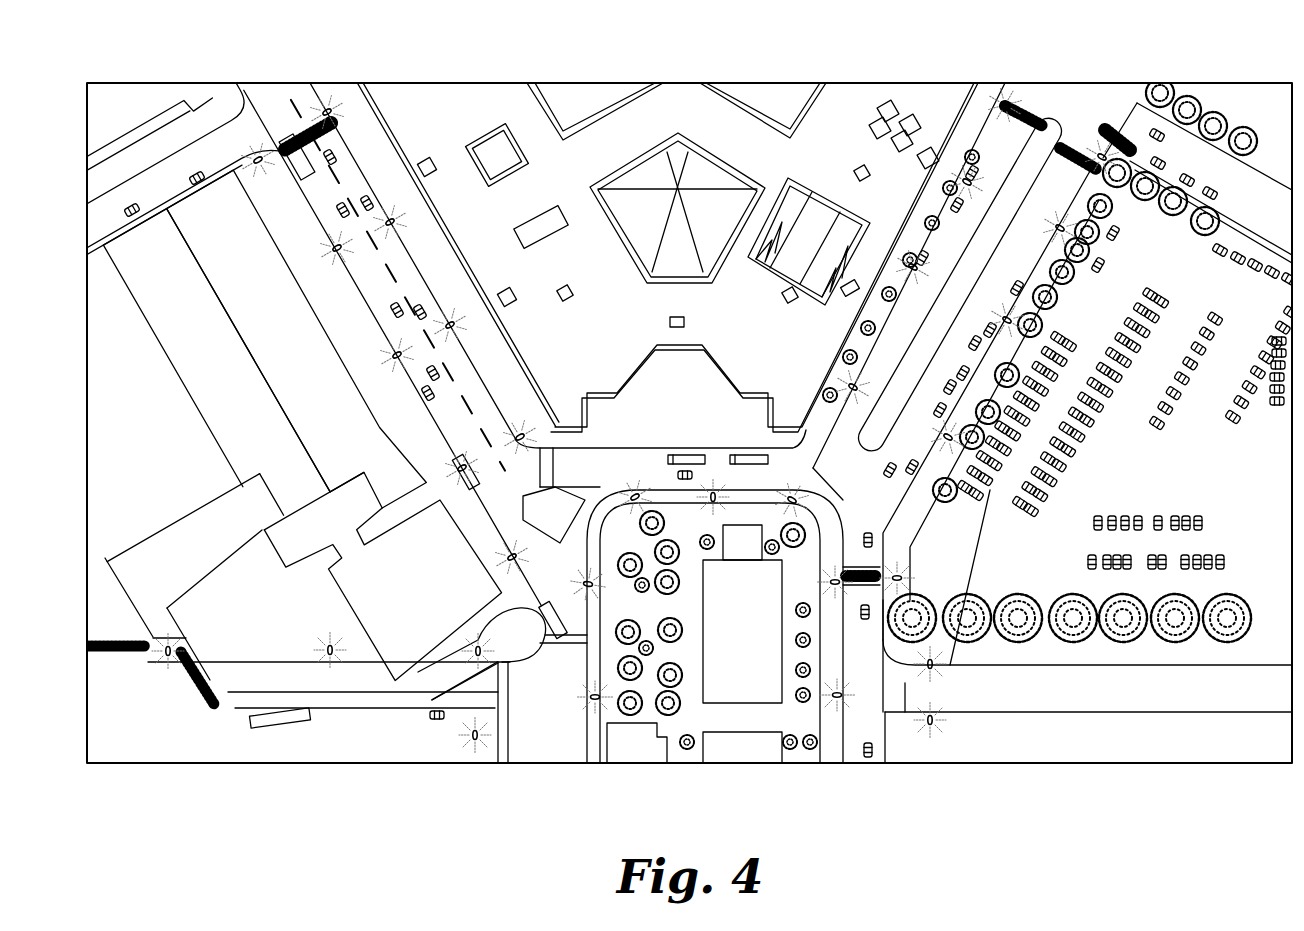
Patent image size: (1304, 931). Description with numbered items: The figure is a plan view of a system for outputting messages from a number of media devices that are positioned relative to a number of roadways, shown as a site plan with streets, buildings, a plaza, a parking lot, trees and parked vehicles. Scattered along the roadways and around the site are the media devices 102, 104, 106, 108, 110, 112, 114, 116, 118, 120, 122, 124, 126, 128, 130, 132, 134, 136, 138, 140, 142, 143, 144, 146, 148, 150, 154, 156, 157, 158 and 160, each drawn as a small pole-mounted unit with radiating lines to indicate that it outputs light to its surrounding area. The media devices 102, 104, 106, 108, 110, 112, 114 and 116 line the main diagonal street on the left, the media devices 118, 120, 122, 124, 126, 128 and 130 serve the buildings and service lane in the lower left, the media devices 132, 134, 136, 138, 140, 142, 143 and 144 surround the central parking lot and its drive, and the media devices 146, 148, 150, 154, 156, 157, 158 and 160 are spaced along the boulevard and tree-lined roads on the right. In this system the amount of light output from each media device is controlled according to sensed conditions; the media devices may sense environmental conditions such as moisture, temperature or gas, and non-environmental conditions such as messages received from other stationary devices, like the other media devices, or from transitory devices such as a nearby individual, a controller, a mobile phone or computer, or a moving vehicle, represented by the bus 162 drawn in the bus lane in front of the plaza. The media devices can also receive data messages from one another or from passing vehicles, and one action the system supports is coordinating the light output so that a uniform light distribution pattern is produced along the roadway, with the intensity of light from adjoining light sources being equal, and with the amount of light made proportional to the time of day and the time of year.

The media device 102 is at (258, 160).
The media device 104 is at (327, 112).
The media device 106 is at (337, 248).
The media device 108 is at (390, 222).
The media device 110 is at (397, 355).
The media device 112 is at (450, 325).
The media device 114 is at (462, 468).
The media device 116 is at (520, 437).
The media device 118 is at (512, 557).
The media device 120 is at (588, 584).
The media device 122 is at (478, 651).
The media device 124 is at (475, 735).
The media device 126 is at (330, 650).
The media device 128 is at (168, 651).
The media device 130 is at (595, 697).
The media device 132 is at (635, 497).
The media device 134 is at (713, 497).
The media device 136 is at (792, 500).
The media device 138 is at (835, 582).
The media device 140 is at (837, 695).
The media device 142 is at (897, 578).
The media device 143 is at (930, 720).
The media device 144 is at (930, 664).
The media device 146 is at (948, 437).
The media device 148 is at (853, 387).
The media device 150 is at (1007, 320).
The media device 154 is at (967, 182).
The media device 156 is at (1060, 228).
The media device 157 is at (913, 267).
The media device 158 is at (1102, 157).
The media device 160 is at (1005, 105).
The bus 162 is at (685, 455).